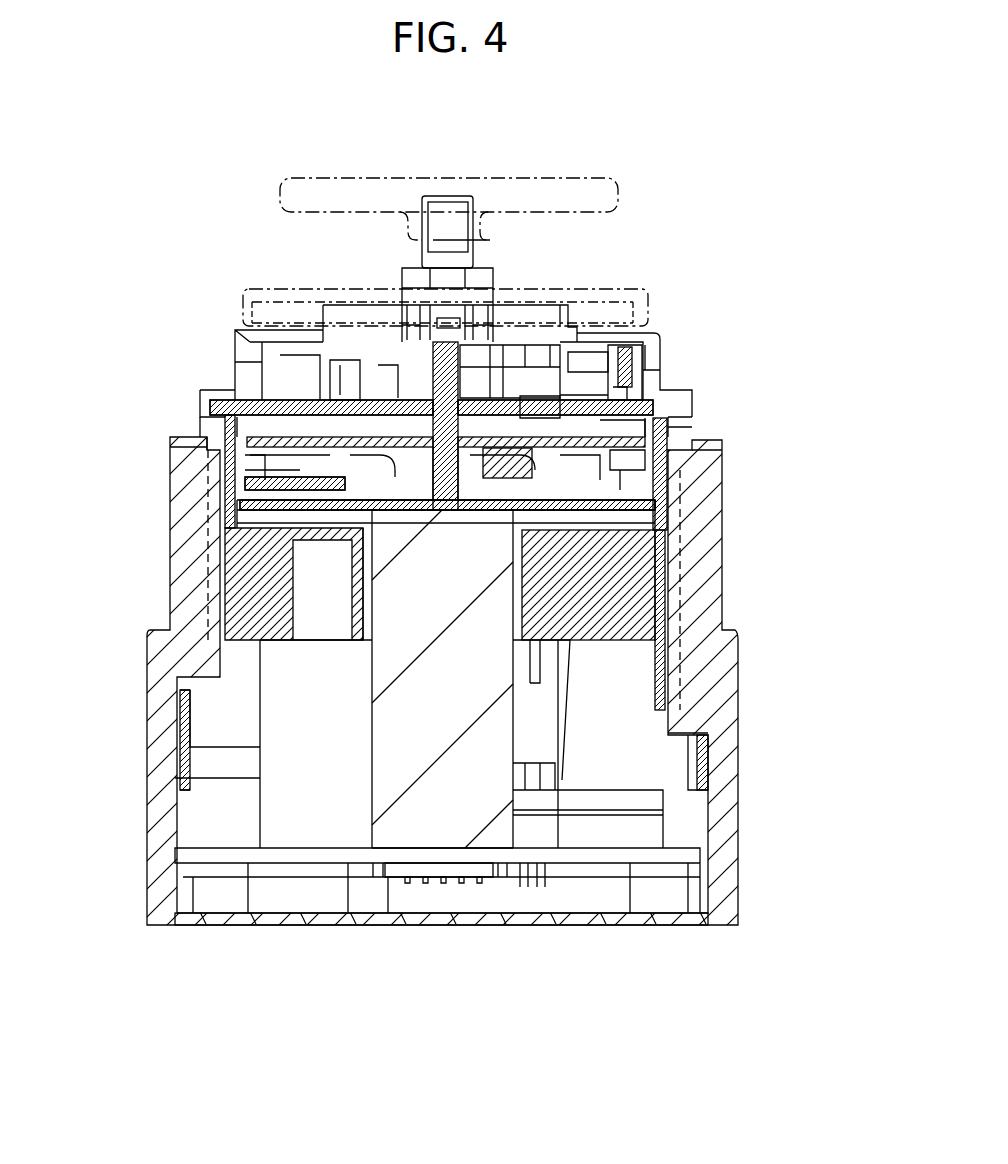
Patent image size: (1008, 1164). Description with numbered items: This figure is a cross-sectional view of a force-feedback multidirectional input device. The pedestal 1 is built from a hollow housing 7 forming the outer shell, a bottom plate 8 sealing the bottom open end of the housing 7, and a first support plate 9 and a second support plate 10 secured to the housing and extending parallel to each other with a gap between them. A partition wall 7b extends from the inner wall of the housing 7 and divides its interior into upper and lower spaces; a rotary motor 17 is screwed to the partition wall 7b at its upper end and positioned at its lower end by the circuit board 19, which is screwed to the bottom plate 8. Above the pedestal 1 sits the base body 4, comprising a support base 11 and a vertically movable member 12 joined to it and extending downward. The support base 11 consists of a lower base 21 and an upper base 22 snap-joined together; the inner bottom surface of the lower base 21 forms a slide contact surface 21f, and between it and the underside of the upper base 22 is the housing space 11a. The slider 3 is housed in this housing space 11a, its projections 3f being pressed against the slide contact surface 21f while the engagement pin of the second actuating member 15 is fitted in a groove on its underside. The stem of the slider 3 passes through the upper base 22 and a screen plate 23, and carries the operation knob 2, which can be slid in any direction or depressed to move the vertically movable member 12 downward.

The pedestal 1 is at (822, 520).
The operation knob 2 is at (619, 172).
The slider 3 is at (537, 353).
The projections 3f is at (545, 402).
The base body 4 is at (76, 327).
The housing 7 is at (447, 681).
The partition wall 7b is at (230, 557).
The bottom plate 8 is at (660, 915).
The first support plate 9 is at (617, 445).
The second support plate 10 is at (653, 532).
The support base 11 is at (419, 373).
The housing space 11a is at (590, 372).
The vertically movable member 12 is at (223, 465).
The second actuating member 15 is at (250, 482).
The rotary motor 17 is at (370, 795).
The circuit board 19 is at (592, 860).
The lower base 21 is at (440, 364).
The slide contact surface 21f is at (593, 400).
The upper base 22 is at (238, 347).
The screen plate 23 is at (628, 291).